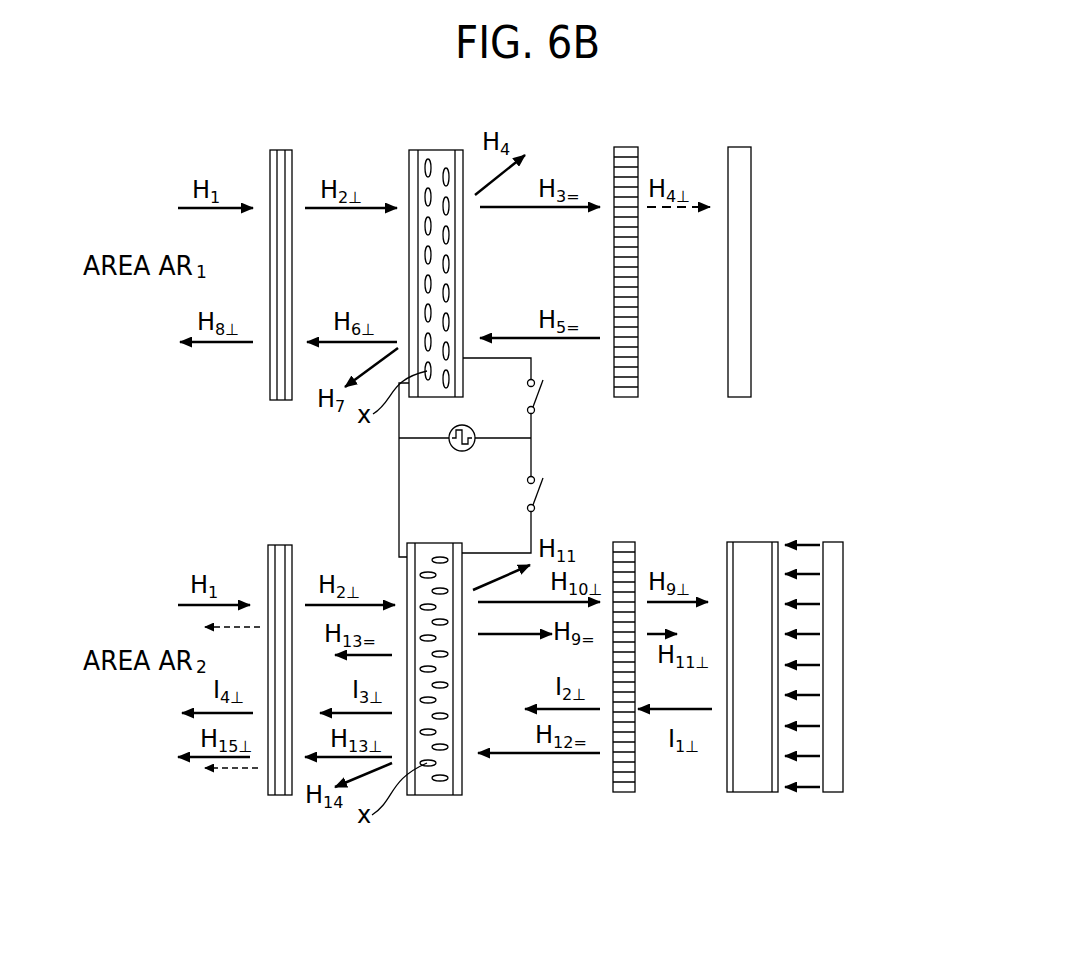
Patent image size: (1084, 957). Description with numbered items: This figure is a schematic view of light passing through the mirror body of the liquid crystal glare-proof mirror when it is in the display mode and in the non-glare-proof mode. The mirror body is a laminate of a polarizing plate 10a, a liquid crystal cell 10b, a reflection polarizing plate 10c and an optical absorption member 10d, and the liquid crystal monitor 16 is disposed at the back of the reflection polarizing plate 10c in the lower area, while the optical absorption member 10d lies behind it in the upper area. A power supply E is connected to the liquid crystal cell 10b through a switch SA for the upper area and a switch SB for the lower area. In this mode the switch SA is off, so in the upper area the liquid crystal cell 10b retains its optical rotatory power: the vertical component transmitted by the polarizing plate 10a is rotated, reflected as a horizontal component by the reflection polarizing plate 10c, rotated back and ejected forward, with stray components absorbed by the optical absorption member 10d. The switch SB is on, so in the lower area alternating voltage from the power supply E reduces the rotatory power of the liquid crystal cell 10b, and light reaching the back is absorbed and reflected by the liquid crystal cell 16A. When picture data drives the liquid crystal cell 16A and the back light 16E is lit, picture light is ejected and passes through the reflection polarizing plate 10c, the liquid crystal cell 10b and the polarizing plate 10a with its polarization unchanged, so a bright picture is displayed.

The polarizing plate 10a is at (283, 156).
The liquid crystal cell 10b is at (428, 160).
The reflection polarizing plate 10c is at (625, 150).
The optical absorption member 10d is at (740, 152).
The liquid crystal monitor 16 is at (804, 603).
The liquid crystal cell 16A is at (753, 547).
The back light 16E is at (836, 547).
The switch SA is at (546, 395).
The switch SB is at (546, 490).
The power supply E is at (472, 448).